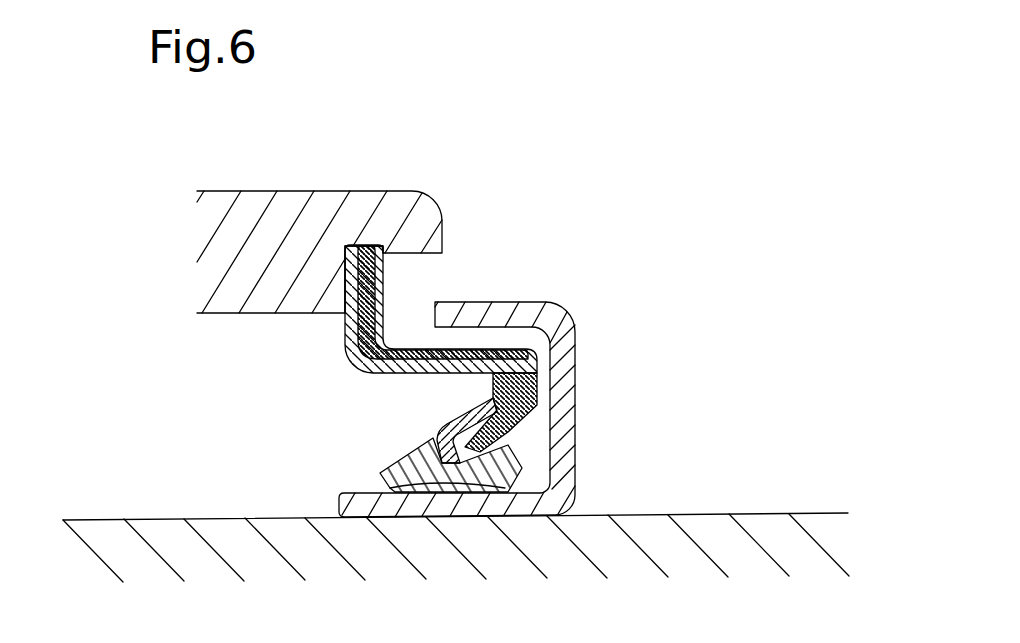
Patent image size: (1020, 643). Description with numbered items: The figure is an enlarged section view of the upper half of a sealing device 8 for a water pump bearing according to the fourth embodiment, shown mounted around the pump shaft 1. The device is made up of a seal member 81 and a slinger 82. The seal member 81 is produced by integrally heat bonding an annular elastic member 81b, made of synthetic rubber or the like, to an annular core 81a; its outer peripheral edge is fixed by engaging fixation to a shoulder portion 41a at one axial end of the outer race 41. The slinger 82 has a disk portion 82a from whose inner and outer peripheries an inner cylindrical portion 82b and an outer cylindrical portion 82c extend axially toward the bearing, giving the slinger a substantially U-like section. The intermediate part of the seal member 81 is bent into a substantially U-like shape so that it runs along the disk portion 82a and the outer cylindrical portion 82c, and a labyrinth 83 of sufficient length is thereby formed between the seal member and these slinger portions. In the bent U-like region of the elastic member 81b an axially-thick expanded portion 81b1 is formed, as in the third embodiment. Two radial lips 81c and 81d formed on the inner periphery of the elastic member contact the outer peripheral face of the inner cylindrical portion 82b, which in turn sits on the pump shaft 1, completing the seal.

The pump shaft 1 is at (172, 520).
The sealing device 8 is at (627, 226).
The outer race 41 is at (262, 207).
The shoulder portion 41a is at (337, 252).
The seal member 81 is at (335, 338).
The annular core 81a is at (420, 373).
The annular elastic member 81b is at (453, 350).
The axially-thick expanded portion 81b1 is at (542, 400).
The radial lip 81c is at (507, 490).
The radial lip 81d is at (390, 490).
The slinger 82 is at (594, 364).
The disk portion 82a is at (567, 425).
The inner cylindrical portion 82b is at (450, 492).
The outer cylindrical portion 82c is at (517, 308).
The labyrinth 83 is at (540, 362).